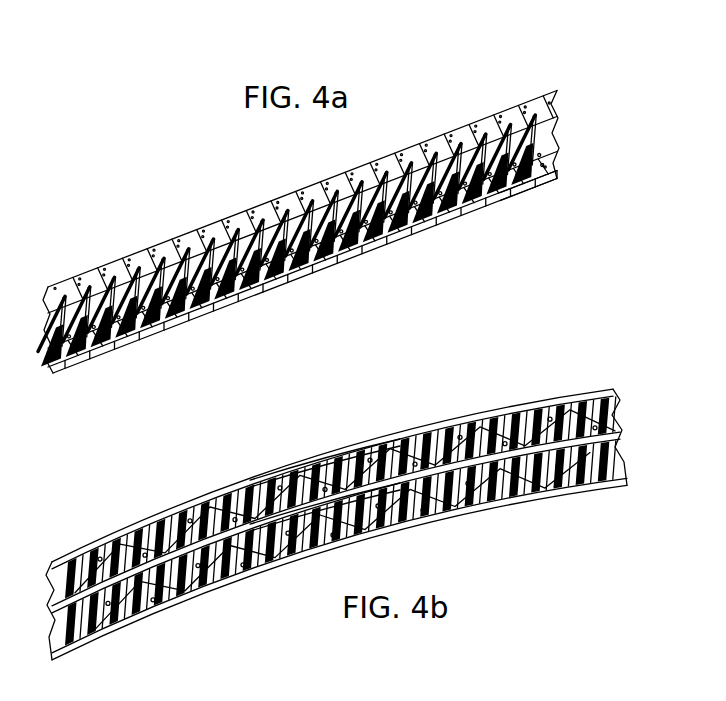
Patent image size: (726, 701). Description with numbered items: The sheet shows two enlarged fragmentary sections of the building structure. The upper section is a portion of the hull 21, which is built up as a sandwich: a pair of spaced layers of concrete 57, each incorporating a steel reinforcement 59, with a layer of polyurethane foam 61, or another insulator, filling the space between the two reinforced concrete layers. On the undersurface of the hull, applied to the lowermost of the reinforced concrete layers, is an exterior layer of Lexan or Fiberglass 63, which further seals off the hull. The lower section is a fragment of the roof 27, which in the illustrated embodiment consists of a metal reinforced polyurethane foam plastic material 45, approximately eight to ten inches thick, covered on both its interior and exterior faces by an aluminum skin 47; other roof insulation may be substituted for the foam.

In FIG. 4a, the hull 21 is at (147, 235).
In FIG. 4a, the layers of concrete 57 is at (257, 216).
In FIG. 4a, the steel reinforcement 59 is at (313, 197).
In FIG. 4a, the layer of polyurethane foam 61 is at (418, 167).
In FIG. 4a, the exterior layer of Lexan or Fiberglass 63 is at (552, 186).
In FIG. 4b, the roof 27 is at (336, 491).
In FIG. 4b, the metal reinforced polyurethane foam plastic material 45 is at (433, 424).
In FIG. 4b, the aluminum skin 47 is at (313, 457).